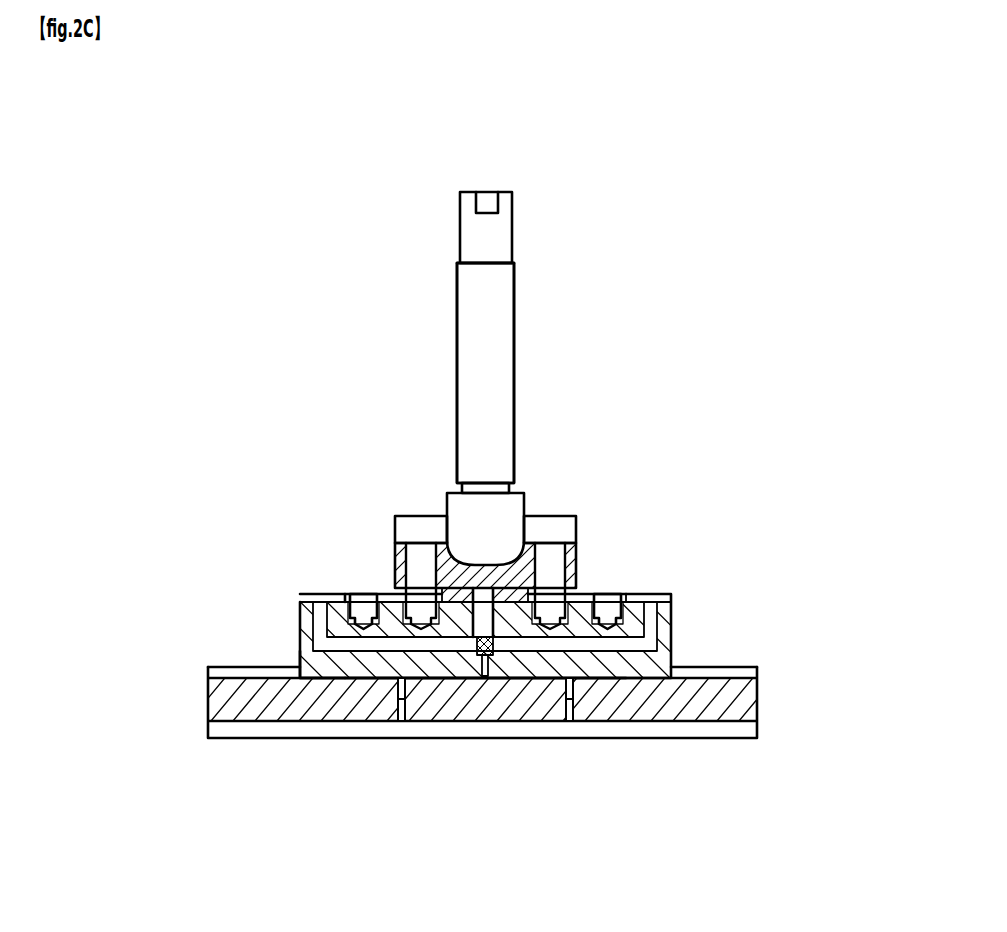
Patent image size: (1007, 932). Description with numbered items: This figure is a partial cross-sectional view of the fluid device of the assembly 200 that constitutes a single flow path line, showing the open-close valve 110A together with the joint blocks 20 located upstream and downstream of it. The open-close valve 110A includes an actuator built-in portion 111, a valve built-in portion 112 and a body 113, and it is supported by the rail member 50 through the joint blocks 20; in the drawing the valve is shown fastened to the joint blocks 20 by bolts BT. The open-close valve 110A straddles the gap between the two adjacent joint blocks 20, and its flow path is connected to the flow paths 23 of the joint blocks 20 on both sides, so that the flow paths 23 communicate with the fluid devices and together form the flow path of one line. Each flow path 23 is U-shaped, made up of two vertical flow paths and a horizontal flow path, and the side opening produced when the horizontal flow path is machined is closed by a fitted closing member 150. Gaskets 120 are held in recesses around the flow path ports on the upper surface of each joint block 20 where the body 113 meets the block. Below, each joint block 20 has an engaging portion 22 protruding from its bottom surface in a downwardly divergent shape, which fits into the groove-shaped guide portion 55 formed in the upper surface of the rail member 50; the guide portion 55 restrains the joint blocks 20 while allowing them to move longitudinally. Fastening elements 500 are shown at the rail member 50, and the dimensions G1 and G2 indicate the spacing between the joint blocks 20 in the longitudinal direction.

The assembly 200 is at (551, 239).
The open-close valve 110A is at (516, 367).
The actuator built-in portion 111 is at (471, 405).
The valve built-in portion 112 is at (449, 499).
The body 113 is at (436, 582).
The bolt BT is at (420, 535).
The gasket 120 is at (434, 588).
The joint block 20 is at (471, 584).
The engaging portion 22 is at (315, 670).
The flow path 23 is at (373, 657).
The closing member 150 is at (479, 655).
The guide portion 55 is at (673, 668).
The rail member 50 is at (640, 721).
The fastening bolt 500 is at (399, 690).
The gap dimension G1 is at (503, 830).
The gap dimension G2 is at (503, 830).